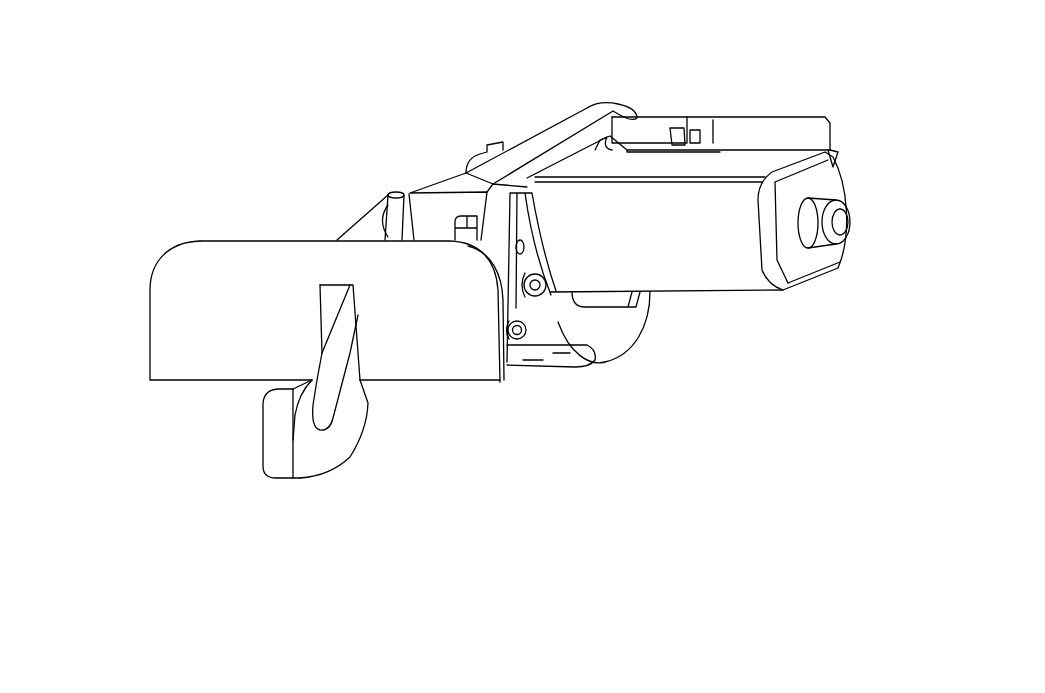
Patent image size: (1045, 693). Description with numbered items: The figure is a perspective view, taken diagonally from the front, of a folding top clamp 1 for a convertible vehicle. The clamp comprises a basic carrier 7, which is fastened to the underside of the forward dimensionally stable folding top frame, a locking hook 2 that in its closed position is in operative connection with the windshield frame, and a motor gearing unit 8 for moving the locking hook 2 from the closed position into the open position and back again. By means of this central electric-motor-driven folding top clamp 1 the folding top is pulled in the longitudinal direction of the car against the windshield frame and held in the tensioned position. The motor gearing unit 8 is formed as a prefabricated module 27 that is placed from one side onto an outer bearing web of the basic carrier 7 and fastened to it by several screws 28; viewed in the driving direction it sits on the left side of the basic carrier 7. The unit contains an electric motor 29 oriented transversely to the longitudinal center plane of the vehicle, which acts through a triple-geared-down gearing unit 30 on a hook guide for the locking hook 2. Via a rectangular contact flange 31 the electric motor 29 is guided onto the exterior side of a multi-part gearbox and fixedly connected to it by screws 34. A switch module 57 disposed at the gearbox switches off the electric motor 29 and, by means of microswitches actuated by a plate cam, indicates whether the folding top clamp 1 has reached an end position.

The folding top clamp 1 is at (583, 99).
The locking hook 2 is at (259, 448).
The basic carrier 7 is at (172, 287).
The motor gearing unit 8 is at (844, 270).
The prefabricated module 27 is at (842, 174).
The screws 28 is at (515, 340).
The electric motor 29 is at (703, 267).
The gearing unit 30 is at (533, 128).
The contact flange 31 is at (462, 171).
The screws 34 is at (537, 302).
The switch module 57 is at (727, 110).